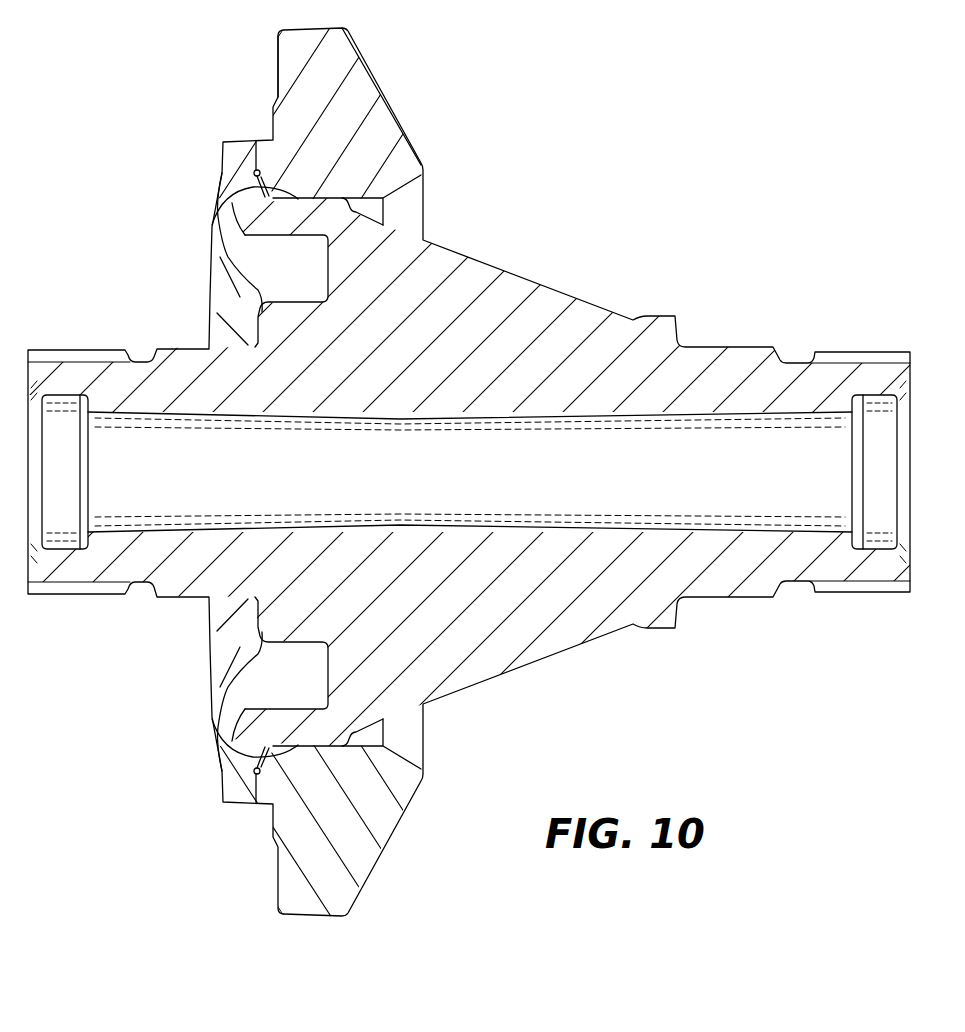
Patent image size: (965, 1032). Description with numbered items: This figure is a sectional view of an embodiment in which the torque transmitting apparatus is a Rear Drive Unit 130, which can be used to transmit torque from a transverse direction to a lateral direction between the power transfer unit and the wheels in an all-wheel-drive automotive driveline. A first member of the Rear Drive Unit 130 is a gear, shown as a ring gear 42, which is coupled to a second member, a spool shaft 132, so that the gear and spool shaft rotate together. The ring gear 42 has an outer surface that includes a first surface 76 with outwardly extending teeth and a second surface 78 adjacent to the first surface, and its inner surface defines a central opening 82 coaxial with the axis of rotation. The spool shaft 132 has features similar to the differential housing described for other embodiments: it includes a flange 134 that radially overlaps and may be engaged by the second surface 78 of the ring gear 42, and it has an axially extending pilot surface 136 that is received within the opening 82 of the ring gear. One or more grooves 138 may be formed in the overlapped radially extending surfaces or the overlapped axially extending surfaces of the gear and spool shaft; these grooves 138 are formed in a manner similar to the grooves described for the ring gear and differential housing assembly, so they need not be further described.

The Rear Drive Unit 130 is at (802, 196).
The spool shaft 132 is at (595, 318).
The ring gear 42 is at (362, 113).
The first surface 76 is at (364, 62).
The second surface 78 is at (276, 96).
The central opening 82 is at (334, 214).
The flange 134 is at (233, 170).
The pilot surface 136 is at (253, 187).
The grooves 138 is at (285, 747).